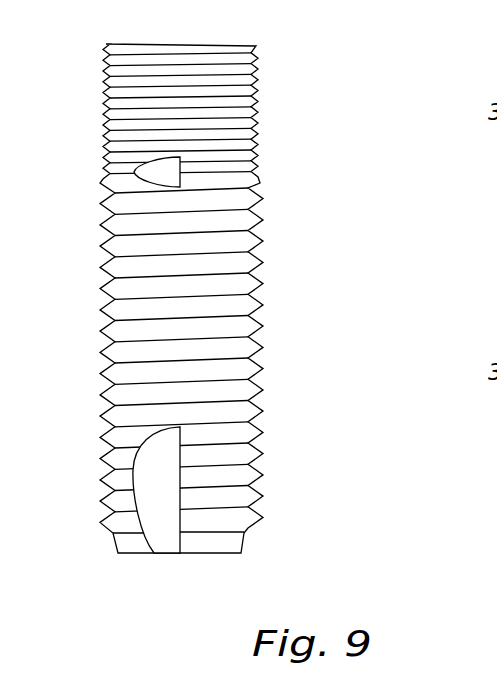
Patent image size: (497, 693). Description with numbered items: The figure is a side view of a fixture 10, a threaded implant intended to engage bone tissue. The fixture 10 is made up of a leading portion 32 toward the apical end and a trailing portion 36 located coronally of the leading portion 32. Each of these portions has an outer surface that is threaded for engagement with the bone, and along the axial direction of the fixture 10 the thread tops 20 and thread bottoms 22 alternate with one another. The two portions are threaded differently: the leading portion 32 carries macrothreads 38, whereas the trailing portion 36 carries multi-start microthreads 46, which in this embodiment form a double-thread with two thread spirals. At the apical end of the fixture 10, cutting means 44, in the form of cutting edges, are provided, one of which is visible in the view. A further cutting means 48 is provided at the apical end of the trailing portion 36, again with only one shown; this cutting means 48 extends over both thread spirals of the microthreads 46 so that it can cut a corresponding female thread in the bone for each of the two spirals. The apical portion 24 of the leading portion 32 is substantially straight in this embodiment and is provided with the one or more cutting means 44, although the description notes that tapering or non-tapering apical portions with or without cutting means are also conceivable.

The fixture 10 is at (365, 140).
The thread tops 20 is at (258, 83).
The thread bottoms 22 is at (259, 88).
The apical portion 24 is at (280, 425).
The leading portion 32 is at (90, 181).
The trailing portion 36 is at (90, 45).
The macrothreads 38 is at (259, 345).
The cutting means 44 is at (160, 533).
The multi-start microthreads 46 is at (258, 125).
The cutting means 48 is at (183, 175).